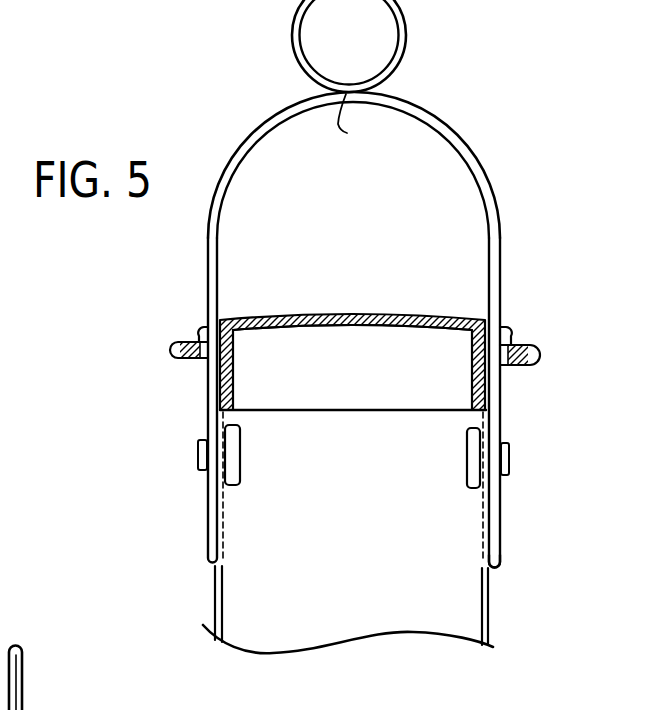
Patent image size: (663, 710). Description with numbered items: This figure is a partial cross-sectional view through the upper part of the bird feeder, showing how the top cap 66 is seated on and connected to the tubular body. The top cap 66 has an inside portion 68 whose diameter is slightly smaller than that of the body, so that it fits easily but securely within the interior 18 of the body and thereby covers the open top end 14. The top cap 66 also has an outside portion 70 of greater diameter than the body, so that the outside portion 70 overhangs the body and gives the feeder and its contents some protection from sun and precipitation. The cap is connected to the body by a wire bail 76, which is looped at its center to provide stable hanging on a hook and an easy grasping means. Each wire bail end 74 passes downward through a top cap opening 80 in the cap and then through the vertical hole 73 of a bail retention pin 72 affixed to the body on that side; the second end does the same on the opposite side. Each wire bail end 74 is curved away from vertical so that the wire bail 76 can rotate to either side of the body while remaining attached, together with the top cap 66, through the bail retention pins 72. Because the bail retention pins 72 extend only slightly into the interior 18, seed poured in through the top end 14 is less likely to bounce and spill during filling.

The top end 14 is at (325, 330).
The interior 18 is at (355, 492).
The top cap 66 is at (368, 313).
The inside portion 68 is at (172, 346).
The outside portion 70 is at (508, 327).
The bail retention pin 72 is at (198, 457).
The vertical hole 73 is at (503, 433).
The wire bail end 74 is at (500, 563).
The wire bail 76 is at (500, 173).
The top cap opening 80 is at (207, 320).